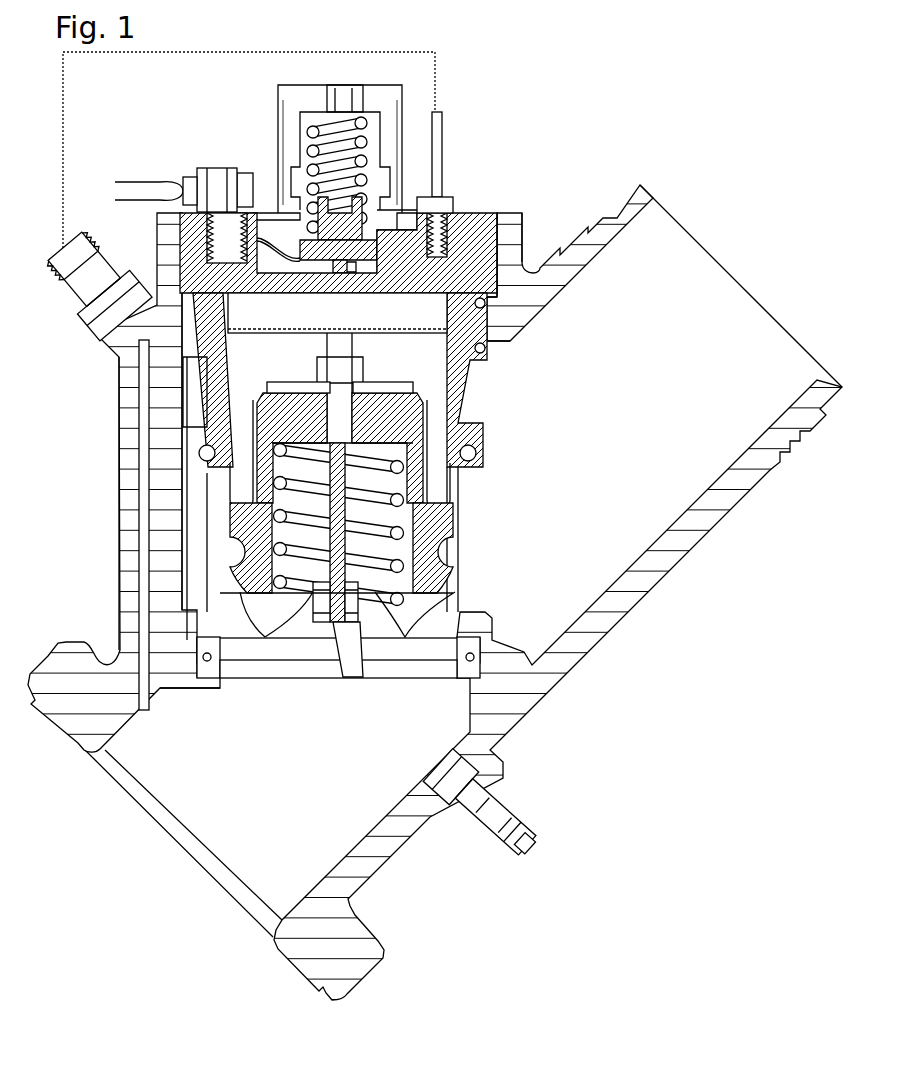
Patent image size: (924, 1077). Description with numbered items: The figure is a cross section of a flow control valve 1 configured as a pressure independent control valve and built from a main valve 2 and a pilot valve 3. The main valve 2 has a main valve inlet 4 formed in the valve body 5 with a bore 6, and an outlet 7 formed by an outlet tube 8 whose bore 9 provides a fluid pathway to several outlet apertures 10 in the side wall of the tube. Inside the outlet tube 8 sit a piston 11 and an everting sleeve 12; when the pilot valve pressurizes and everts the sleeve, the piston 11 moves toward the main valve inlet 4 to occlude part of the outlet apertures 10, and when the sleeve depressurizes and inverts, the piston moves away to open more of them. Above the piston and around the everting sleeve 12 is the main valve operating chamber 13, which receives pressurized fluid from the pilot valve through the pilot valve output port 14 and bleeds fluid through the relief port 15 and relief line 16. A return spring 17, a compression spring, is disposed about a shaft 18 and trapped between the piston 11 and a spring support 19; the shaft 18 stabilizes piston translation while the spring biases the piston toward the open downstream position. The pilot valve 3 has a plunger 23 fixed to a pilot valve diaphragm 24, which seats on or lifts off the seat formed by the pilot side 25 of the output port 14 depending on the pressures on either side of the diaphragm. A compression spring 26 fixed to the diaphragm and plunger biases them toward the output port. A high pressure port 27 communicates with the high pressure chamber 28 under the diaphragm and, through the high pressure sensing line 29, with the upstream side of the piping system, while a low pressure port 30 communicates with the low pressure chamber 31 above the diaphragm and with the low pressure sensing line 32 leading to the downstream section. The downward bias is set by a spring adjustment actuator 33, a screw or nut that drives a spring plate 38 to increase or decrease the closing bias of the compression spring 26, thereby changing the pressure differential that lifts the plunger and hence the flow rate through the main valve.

The flow control valve 1 is at (112, 245).
The main valve 2 is at (113, 482).
The pilot valve 3 is at (243, 118).
The main valve inlet 4 is at (140, 838).
The valve body 5 is at (528, 245).
The bore 6 is at (256, 795).
The outlet 7 is at (205, 515).
The outlet tube 8 is at (217, 383).
The bore 9 is at (307, 662).
The outlet apertures 10 is at (276, 610).
The piston 11 is at (225, 583).
The everting sleeve 12 is at (250, 412).
The main valve operating chamber 13 is at (295, 362).
The pilot valve output port 14 is at (345, 276).
The relief port 15 is at (504, 340).
The relief line 16 is at (492, 213).
The return spring 17 is at (415, 562).
The shaft 18 is at (395, 535).
The spring support 19 is at (362, 672).
The plunger 23 is at (348, 268).
The pilot valve diaphragm 24 is at (268, 240).
The pilot side of the pilot valve output port 25 is at (385, 272).
The compression spring 26 is at (320, 125).
The high pressure port 27 is at (228, 200).
The high pressure chamber 28 is at (290, 280).
The high pressure sensing line 29 is at (160, 182).
The low pressure port 30 is at (445, 200).
The low pressure chamber 31 is at (380, 229).
The low pressure sensing line 32 is at (139, 445).
The spring adjustment actuator 33 is at (370, 88).
The spring plate 38 is at (285, 245).